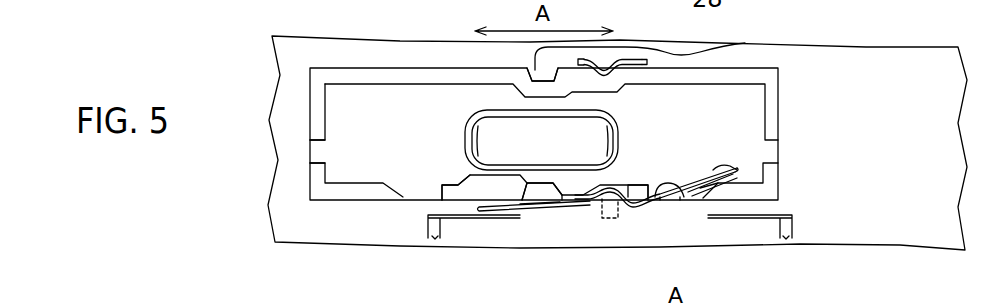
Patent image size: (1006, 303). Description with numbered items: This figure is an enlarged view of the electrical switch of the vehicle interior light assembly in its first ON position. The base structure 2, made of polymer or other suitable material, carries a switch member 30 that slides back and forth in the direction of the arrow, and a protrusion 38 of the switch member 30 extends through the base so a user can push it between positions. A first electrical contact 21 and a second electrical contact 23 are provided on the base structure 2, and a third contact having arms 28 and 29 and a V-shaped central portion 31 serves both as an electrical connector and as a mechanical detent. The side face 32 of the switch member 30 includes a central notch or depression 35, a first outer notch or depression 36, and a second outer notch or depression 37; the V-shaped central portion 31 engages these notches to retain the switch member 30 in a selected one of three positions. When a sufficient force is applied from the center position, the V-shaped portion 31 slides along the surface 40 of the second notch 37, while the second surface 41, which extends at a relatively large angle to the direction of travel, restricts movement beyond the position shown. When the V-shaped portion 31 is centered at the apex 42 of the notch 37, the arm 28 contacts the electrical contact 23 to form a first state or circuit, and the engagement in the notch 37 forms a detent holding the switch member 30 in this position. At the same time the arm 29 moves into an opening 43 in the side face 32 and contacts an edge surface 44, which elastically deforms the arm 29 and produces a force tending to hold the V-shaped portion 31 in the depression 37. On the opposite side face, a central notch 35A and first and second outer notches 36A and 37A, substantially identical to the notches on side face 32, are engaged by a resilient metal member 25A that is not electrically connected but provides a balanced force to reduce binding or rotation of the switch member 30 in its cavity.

The base structure 2 is at (867, 49).
The first electrical contact 21 is at (745, 218).
The second electrical contact 23 is at (477, 206).
The resilient metal member 25A is at (747, 43).
The arm 28 is at (530, 212).
The arm 29 is at (690, 175).
The switch member 30 is at (770, 64).
The V-shaped central portion 31 is at (650, 180).
The side face 32 is at (378, 200).
The central notch or depression 35 is at (546, 190).
The central notch or depression 35A is at (598, 71).
The first outer notch or depression 36 is at (473, 200).
The first outer notch or depression 36A is at (475, 75).
The second outer notch or depression 37 is at (590, 200).
The second outer notch or depression 37A is at (612, 72).
The protrusion 38 is at (613, 122).
The surface 40 is at (586, 205).
The second surface 41 is at (655, 178).
The apex 42 is at (622, 173).
The opening 43 is at (676, 198).
The edge surface 44 is at (663, 192).